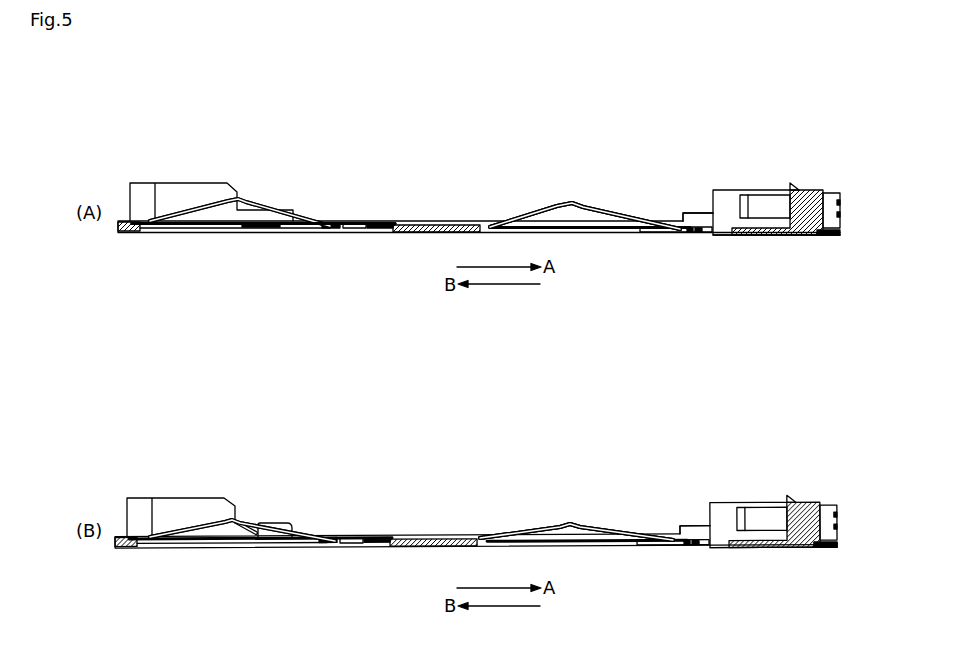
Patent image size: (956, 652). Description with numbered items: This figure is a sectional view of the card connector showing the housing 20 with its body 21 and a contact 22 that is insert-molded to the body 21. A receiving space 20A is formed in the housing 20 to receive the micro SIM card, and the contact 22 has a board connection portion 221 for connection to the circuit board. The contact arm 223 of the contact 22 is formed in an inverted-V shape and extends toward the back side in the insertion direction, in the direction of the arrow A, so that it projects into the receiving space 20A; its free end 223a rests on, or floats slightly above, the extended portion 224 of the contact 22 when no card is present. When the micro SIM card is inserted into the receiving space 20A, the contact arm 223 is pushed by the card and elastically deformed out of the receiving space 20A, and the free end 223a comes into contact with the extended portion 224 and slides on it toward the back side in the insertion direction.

The housing 20 is at (807, 113).
The receiving space 20A is at (635, 161).
The body 21 is at (215, 190).
The contact 22 is at (258, 181).
The board connection portion 221 is at (330, 223).
The contact arm 223 is at (260, 203).
The free end 223a is at (343, 225).
The extended portion 224 is at (708, 235).